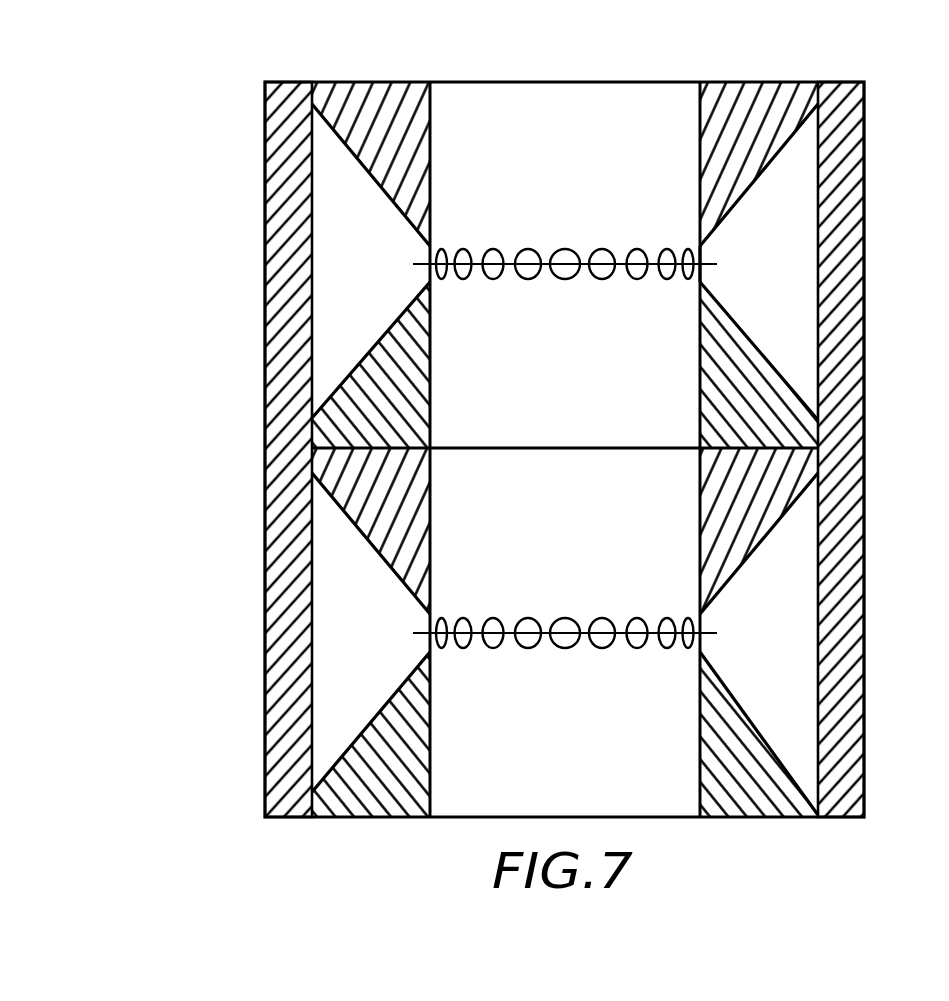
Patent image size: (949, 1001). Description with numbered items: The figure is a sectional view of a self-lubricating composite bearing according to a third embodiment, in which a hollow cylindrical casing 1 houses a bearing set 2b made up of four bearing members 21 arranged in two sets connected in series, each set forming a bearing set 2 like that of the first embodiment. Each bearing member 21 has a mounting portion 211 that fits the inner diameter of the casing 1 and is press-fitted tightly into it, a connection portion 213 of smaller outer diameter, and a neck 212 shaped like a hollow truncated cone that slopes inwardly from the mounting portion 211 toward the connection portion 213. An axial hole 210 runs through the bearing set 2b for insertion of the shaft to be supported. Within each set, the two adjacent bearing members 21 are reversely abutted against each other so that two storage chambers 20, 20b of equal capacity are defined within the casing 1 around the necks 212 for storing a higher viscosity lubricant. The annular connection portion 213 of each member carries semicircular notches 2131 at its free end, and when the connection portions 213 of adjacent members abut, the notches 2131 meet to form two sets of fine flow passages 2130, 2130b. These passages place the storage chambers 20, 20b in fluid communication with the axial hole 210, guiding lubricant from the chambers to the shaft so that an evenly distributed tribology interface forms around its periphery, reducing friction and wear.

The casing 1 is at (847, 127).
The bearing set 2 is at (198, 175).
The bearing set 2b is at (137, 260).
The storage chamber 20 is at (790, 318).
The storage chamber 20b is at (787, 630).
The bearing member 21 is at (408, 150).
The axial hole 210 is at (539, 125).
The mounting portion 211 is at (818, 422).
The neck 212 is at (775, 160).
The connection portion 213 is at (707, 246).
The fine flow passages 2130 is at (564, 278).
The fine flow passages 2130b is at (572, 642).
The semicircular notches 2131 is at (597, 256).